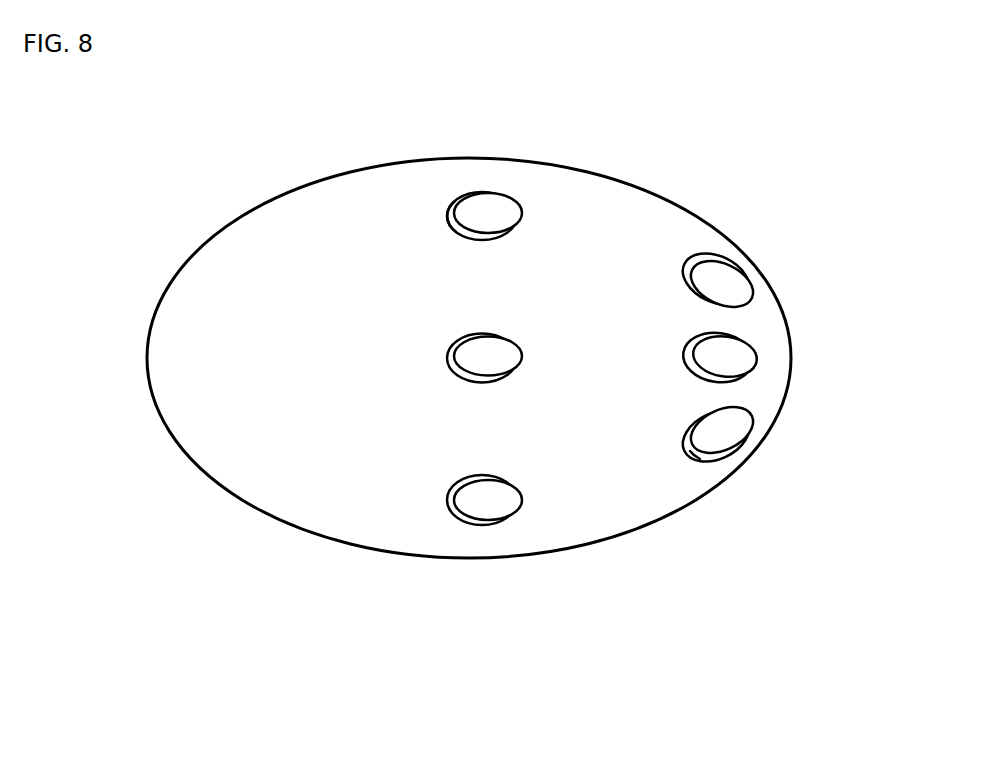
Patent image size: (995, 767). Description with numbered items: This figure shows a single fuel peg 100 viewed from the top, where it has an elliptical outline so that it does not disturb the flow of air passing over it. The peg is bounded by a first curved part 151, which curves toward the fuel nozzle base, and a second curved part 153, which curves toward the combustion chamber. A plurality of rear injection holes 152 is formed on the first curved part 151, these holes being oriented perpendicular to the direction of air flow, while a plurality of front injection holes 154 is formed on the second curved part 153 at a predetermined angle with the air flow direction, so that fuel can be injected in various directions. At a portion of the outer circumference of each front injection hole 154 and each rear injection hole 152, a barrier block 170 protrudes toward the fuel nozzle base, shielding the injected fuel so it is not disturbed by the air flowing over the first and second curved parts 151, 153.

The fuel peg 100 is at (235, 132).
The first curved part 151 is at (218, 391).
The rear injection hole 152 is at (490, 503).
The second curved part 153 is at (615, 478).
The front injection hole 154 is at (732, 425).
The barrier block 170 is at (445, 500).